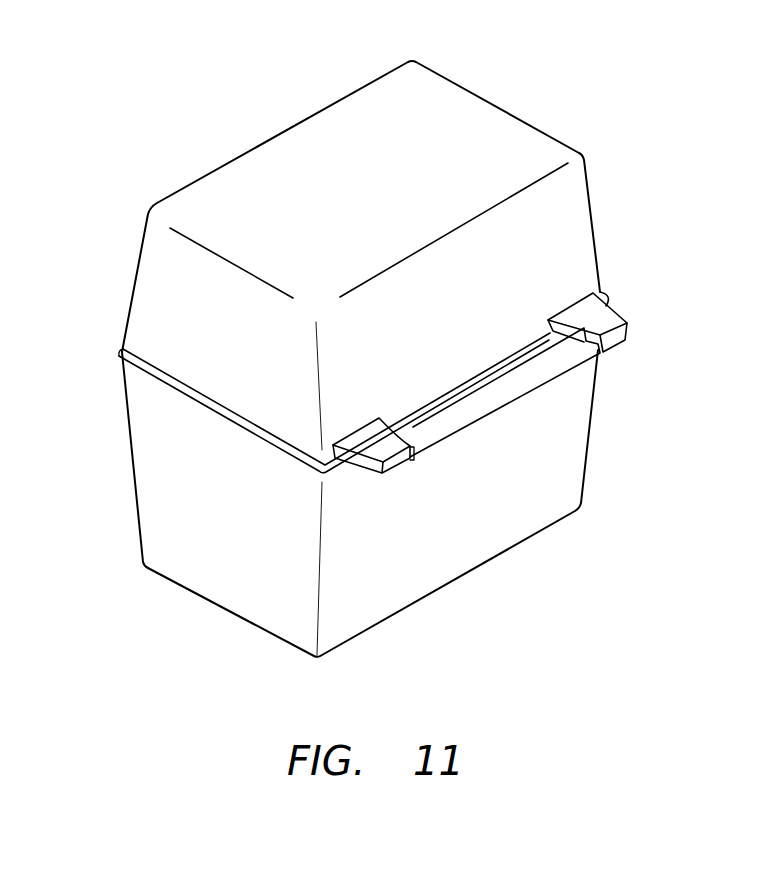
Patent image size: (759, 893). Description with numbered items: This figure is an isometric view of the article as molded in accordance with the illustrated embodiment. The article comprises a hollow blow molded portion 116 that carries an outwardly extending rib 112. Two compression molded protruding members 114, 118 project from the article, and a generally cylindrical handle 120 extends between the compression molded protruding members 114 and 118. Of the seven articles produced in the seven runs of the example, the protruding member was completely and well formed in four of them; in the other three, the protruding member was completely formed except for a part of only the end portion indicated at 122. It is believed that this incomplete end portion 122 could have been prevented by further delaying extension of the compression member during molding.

The outwardly extending rib 112 is at (121, 352).
The compression molded protruding member 114 is at (347, 486).
The hollow blow molded portion 116 is at (507, 128).
The compression molded protruding member 118 is at (633, 300).
The handle 120 is at (502, 401).
The end portion of protruding member 122 is at (398, 463).